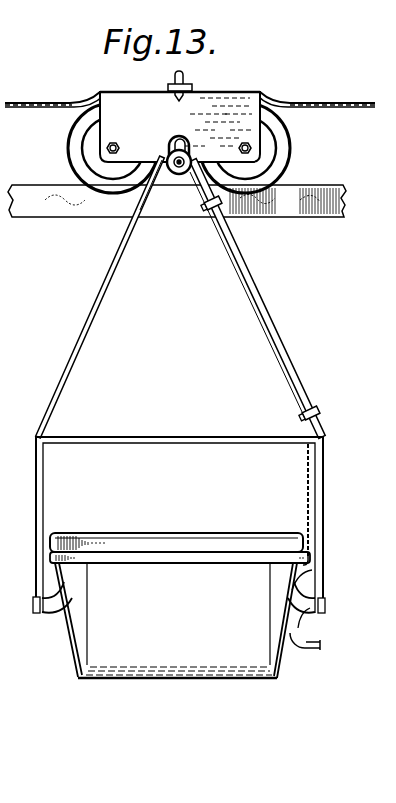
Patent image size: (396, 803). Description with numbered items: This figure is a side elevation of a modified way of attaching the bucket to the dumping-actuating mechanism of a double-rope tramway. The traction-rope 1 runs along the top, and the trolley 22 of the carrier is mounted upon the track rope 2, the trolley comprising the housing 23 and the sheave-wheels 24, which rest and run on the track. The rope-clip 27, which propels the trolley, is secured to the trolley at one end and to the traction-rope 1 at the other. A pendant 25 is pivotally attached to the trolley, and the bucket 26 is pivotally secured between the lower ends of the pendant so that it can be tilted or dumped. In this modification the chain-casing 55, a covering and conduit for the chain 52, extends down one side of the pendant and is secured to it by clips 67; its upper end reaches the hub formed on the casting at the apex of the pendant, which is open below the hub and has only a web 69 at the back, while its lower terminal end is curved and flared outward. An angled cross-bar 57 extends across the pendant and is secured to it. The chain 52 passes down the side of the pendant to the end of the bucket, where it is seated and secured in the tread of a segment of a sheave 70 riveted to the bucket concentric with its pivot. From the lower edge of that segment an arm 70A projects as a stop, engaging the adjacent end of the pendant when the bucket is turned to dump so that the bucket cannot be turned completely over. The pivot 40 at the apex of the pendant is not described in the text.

The traction-rope 1 is at (313, 93).
The track rope 2 is at (65, 208).
The trolley 22 is at (128, 86).
The housing 23 is at (180, 127).
The sheave-wheels 24 is at (72, 139).
The pendant 25 is at (75, 362).
The bucket 26 is at (180, 605).
The rope-clip 27 is at (189, 89).
The pivot pin 40 is at (167, 157).
The chain 52 is at (307, 492).
The casing 55 is at (263, 340).
The angled cross-bar 57 is at (187, 441).
The clips 67 is at (213, 208).
The web 69 is at (163, 185).
The segment of a sheave 70 is at (317, 622).
The arm 70A is at (317, 640).